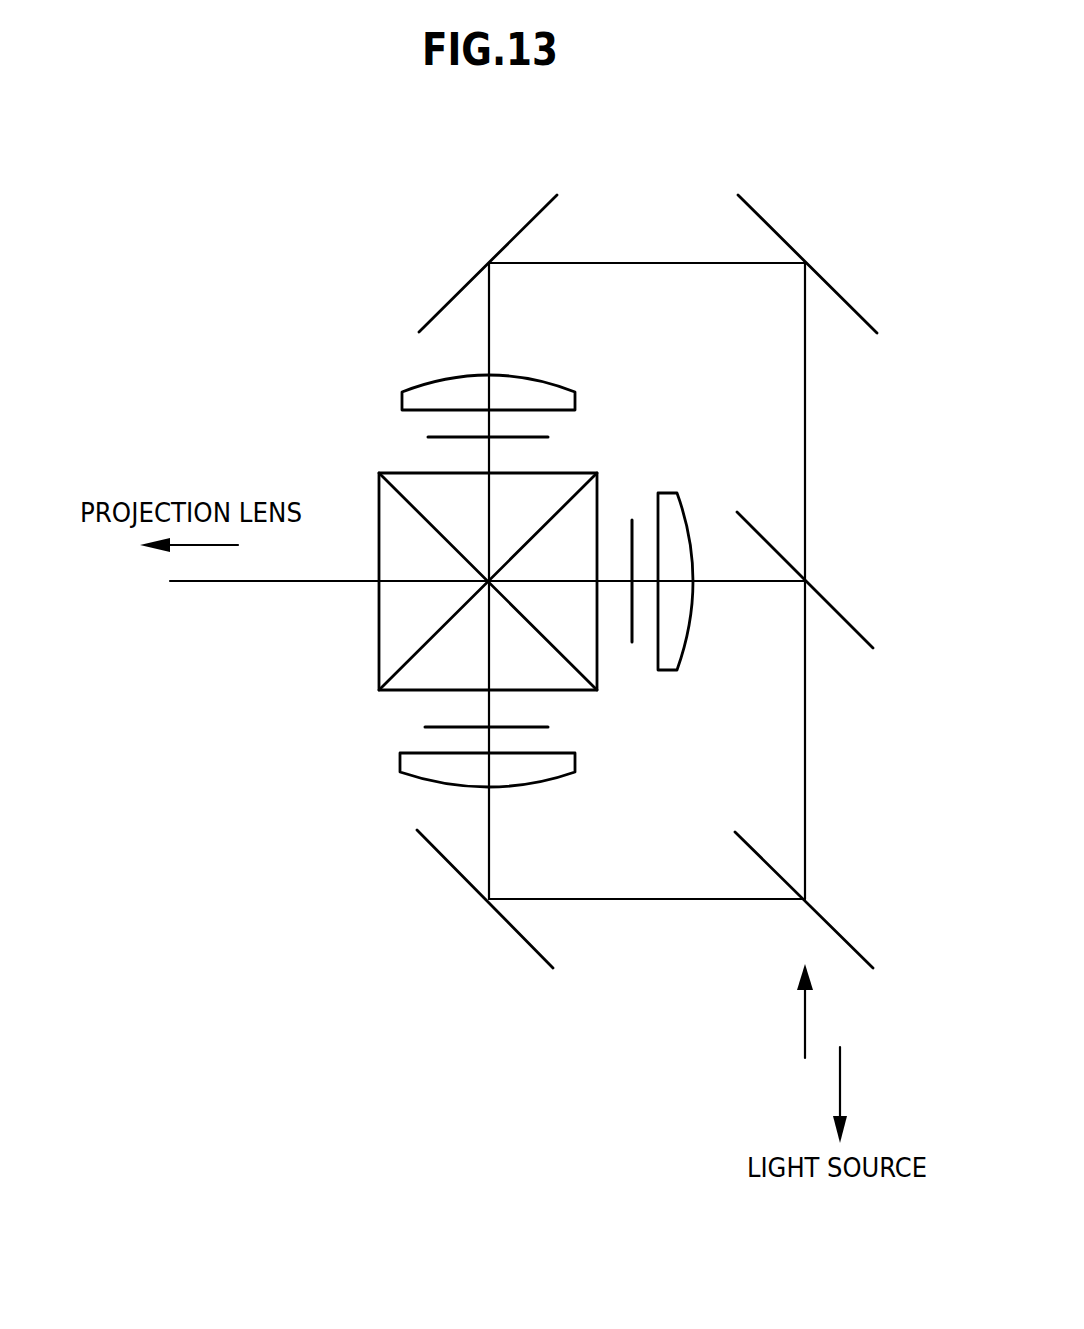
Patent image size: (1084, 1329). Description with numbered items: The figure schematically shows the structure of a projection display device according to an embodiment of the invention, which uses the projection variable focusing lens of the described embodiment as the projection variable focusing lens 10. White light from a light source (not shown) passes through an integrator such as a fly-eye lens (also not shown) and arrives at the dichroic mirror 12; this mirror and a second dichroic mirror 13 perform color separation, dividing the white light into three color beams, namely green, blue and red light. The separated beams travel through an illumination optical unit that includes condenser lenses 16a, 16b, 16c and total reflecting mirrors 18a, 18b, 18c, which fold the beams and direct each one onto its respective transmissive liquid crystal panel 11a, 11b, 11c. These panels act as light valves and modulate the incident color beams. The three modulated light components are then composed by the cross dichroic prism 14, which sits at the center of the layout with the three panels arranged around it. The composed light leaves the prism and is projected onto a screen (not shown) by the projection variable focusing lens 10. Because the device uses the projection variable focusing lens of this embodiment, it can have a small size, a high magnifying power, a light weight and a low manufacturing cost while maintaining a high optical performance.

The projection variable focusing lens 10 is at (290, 176).
The transmissive liquid crystal panel 11a is at (530, 725).
The transmissive liquid crystal panel 11b is at (640, 532).
The transmissive liquid crystal panel 11c is at (437, 437).
The dichroic mirror 12 is at (852, 945).
The dichroic mirror 13 is at (852, 625).
The cross dichroic prism 14 is at (387, 653).
The condenser lens 16a is at (540, 770).
The condenser lens 16b is at (680, 657).
The condenser lens 16c is at (550, 390).
The total reflecting mirror 18a is at (517, 932).
The total reflecting mirror 18b is at (848, 305).
The total reflecting mirror 18c is at (438, 310).